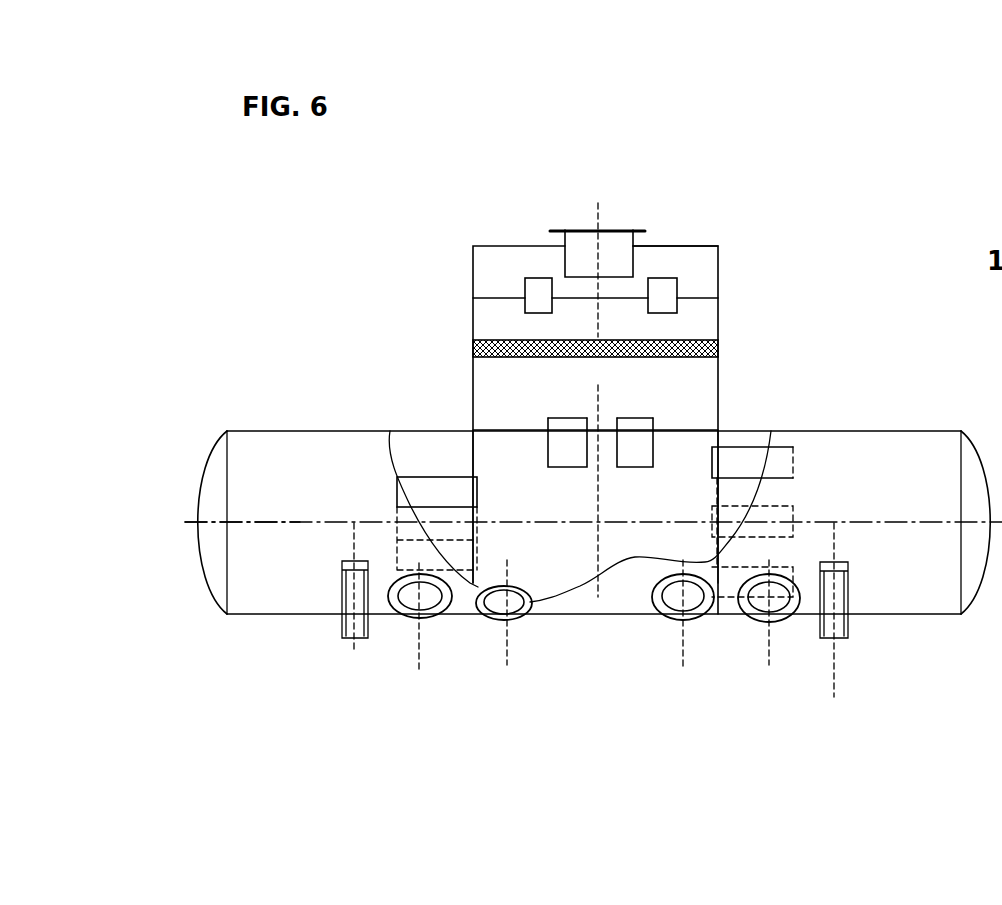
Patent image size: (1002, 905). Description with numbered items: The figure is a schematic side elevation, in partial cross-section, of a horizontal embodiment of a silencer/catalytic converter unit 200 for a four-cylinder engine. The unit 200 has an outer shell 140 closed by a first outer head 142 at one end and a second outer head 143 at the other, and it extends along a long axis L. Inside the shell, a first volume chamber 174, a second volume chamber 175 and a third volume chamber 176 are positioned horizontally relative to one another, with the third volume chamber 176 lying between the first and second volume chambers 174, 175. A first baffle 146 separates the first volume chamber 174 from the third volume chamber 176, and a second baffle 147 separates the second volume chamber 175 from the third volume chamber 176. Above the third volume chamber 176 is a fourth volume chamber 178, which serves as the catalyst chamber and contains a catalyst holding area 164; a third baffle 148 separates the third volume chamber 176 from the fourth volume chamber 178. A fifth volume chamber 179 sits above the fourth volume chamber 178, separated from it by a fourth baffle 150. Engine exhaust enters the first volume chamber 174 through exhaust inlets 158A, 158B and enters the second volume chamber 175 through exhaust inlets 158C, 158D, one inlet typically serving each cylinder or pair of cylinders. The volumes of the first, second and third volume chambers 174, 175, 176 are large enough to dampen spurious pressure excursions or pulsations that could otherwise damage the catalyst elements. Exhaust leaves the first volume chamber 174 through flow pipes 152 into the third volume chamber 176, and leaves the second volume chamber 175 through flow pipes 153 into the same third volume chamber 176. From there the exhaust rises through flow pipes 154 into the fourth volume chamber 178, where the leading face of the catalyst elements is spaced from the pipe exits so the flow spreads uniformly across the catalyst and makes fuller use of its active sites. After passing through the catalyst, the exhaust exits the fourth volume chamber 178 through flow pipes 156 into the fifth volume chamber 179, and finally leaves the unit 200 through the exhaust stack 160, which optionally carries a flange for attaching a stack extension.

The silencer/catalytic converter unit 200 is at (242, 249).
The long axis L is at (192, 523).
The outer shell 140 is at (283, 614).
The first outer head 142 is at (205, 597).
The second outer head 143 is at (972, 432).
The first volume chamber 174 is at (255, 475).
The second volume chamber 175 is at (918, 595).
The catalyst holding area 164 is at (463, 330).
The fifth volume chamber 179 is at (698, 268).
The exhaust stack 160 is at (582, 255).
The fourth baffle 150 is at (698, 295).
The flow pipes 156 is at (528, 293).
The fourth volume chamber 178 is at (500, 395).
The third baffle 148 is at (683, 432).
The flow pipes 154 is at (570, 435).
The first baffle 146 is at (470, 462).
The second baffle 147 is at (705, 497).
The flow pipes 152 is at (463, 487).
The flow pipes 153 is at (763, 462).
The third volume chamber 176 is at (568, 565).
The exhaust inlet 158A is at (416, 612).
The exhaust inlet 158B is at (506, 622).
The exhaust inlet 158C is at (685, 620).
The exhaust inlet 158D is at (790, 620).